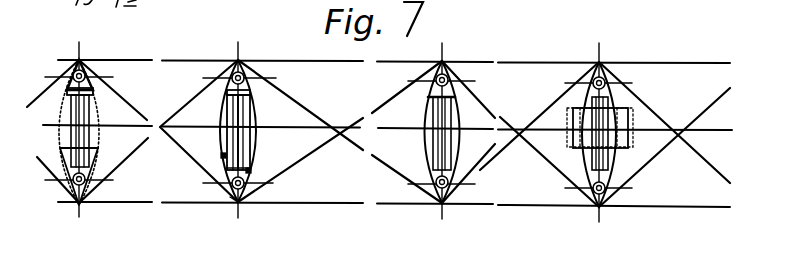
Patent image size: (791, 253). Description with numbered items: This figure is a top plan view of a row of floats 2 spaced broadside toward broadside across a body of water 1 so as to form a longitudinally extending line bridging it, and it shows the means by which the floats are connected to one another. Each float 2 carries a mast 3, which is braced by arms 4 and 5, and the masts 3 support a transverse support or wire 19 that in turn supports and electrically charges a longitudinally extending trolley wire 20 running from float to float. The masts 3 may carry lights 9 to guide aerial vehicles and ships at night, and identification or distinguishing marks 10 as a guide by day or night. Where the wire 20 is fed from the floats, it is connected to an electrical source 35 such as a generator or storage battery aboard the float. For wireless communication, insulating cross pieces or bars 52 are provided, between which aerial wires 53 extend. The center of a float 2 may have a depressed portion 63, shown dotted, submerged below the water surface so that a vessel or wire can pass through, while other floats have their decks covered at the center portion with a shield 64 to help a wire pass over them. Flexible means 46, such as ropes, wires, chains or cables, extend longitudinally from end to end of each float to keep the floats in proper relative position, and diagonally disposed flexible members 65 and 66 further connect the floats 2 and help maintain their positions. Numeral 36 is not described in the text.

The body of water 1 is at (343, 84).
The float 2 is at (92, 97).
The mast 3 is at (225, 92).
The arm 4 is at (602, 53).
The arm 5 is at (52, 77).
The light 9 is at (250, 86).
The identification mark 10 is at (230, 197).
The transverse support 19 is at (452, 138).
The longitudinally extending wire 20 is at (400, 124).
The electrical source 35 is at (221, 155).
The stop 36 is at (250, 173).
The flexible means 46 is at (540, 63).
The insulating cross piece 52 is at (430, 174).
The aerial wire 53 is at (229, 136).
The depressed portion 63 is at (60, 133).
The shield 64 is at (457, 117).
The diagonally disposed flexible member 65 is at (303, 160).
The diagonally disposed flexible member 66 is at (547, 160).